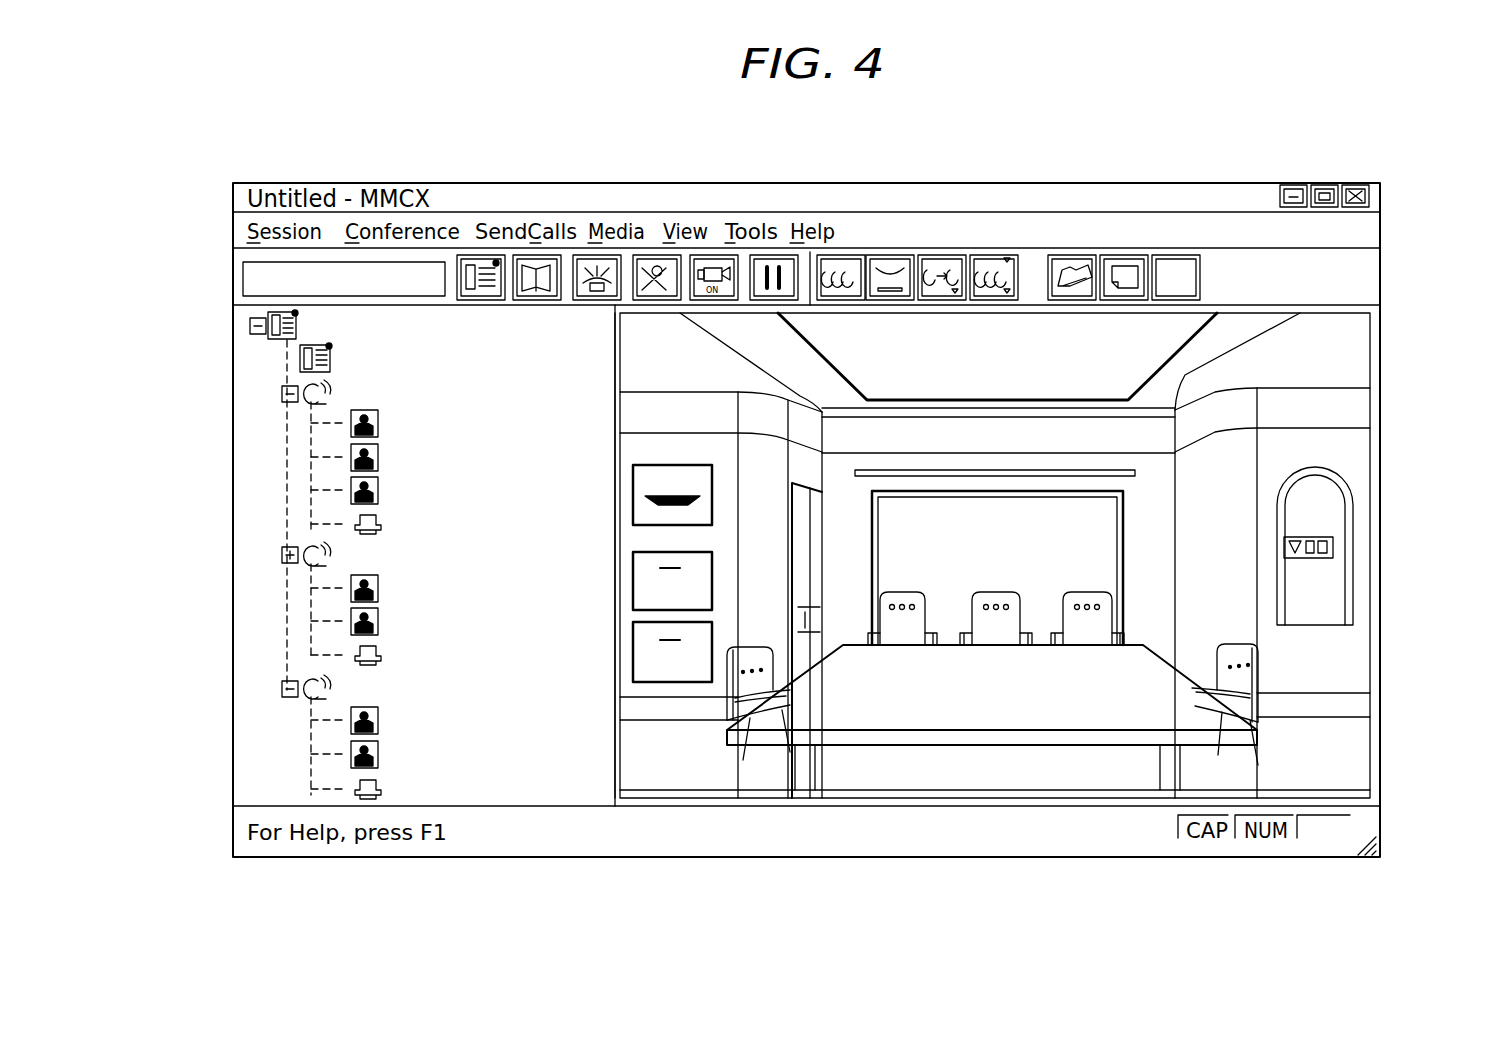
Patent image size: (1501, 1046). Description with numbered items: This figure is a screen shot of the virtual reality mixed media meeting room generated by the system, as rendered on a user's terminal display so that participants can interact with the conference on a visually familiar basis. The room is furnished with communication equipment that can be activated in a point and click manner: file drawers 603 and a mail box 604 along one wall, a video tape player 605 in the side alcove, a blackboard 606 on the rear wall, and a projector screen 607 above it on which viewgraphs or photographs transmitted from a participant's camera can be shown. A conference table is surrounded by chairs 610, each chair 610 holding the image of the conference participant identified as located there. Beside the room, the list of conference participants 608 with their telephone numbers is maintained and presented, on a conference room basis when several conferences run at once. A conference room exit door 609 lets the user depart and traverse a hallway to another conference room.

The file drawers 603 is at (650, 595).
The mail box 604 is at (643, 480).
The video tape player 605 is at (1335, 549).
The blackboard 606 is at (1105, 538).
The projector screen 607 is at (1137, 473).
The list of conference participants 608 is at (262, 427).
The conference room exit door 609 is at (805, 513).
The chair 610 is at (1108, 623).